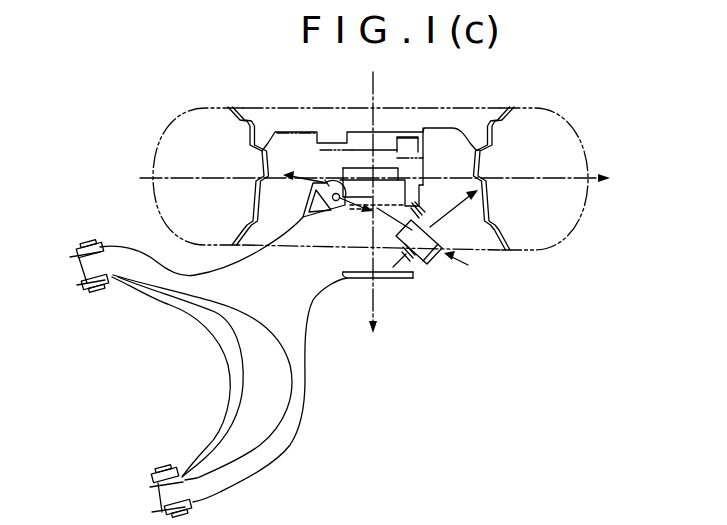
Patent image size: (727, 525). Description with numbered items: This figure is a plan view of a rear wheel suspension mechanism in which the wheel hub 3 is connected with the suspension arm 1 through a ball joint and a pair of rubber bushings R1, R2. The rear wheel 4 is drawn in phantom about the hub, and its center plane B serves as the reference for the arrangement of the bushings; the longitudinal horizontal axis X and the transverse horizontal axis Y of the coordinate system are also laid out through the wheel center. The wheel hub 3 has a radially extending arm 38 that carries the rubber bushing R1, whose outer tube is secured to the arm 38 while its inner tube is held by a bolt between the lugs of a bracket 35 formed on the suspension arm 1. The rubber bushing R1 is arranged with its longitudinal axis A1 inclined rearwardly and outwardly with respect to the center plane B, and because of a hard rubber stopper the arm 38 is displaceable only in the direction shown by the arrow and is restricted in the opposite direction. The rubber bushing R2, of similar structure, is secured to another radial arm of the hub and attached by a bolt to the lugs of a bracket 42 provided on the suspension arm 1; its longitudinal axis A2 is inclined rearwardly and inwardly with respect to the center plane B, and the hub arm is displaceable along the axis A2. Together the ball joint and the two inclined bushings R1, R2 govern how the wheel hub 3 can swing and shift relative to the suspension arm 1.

The suspension arm 1 is at (300, 360).
The wheel hub 3 is at (385, 188).
The rear wheel 4 is at (549, 107).
The bracket 35 is at (432, 268).
The radially extending arm 38 is at (414, 222).
The bracket 42 is at (312, 192).
The rubber bushing R1 is at (478, 267).
The rubber bushing R2 is at (327, 178).
The longitudinal axis A1 is at (407, 277).
The longitudinal axis A2 is at (347, 212).
The center plane B is at (508, 184).
The longitudinal horizontal axis X is at (386, 181).
The transverse horizontal axis Y is at (371, 222).